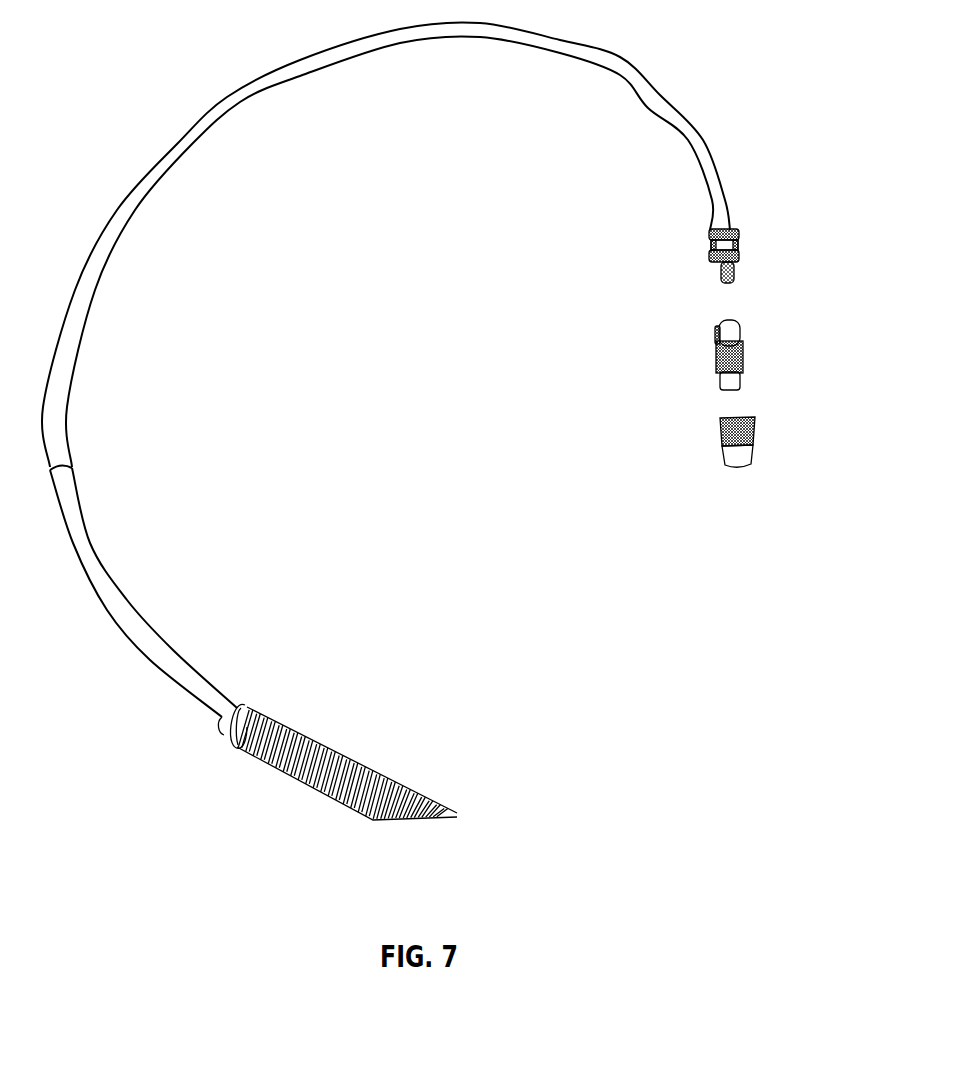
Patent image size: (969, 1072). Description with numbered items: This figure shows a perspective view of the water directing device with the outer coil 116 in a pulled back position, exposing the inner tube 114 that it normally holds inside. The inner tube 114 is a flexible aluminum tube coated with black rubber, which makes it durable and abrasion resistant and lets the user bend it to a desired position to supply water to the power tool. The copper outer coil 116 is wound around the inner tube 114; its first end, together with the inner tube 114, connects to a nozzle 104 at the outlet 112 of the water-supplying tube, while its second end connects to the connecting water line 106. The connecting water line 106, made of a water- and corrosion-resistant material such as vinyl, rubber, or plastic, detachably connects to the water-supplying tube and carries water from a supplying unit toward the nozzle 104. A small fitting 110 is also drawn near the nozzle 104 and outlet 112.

The inner tube 114 is at (178, 145).
The connecting water line 106 is at (140, 613).
The outer coil 116 is at (323, 752).
The outlet 112 is at (740, 249).
The nozzle 104 is at (742, 357).
The fitting 110 is at (751, 452).